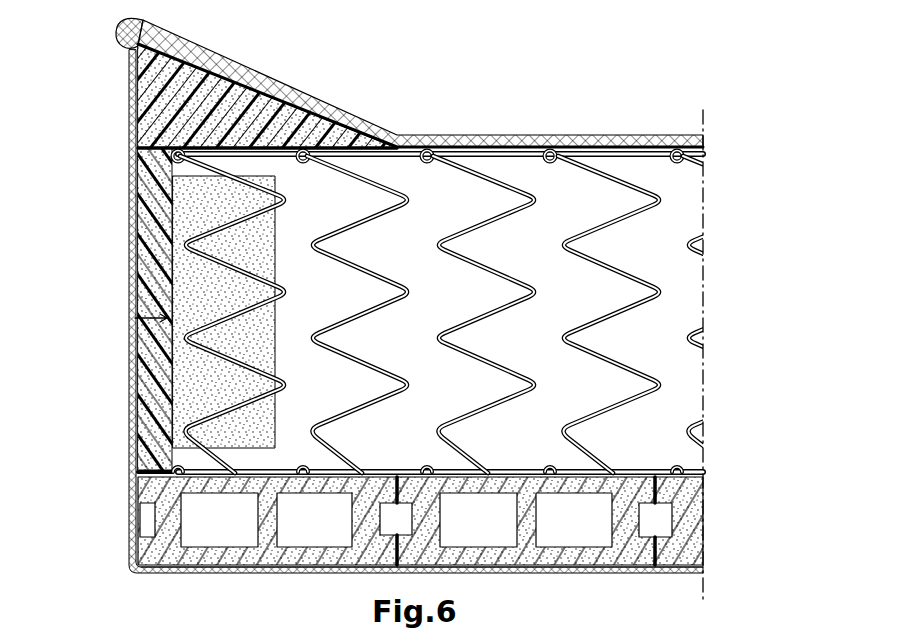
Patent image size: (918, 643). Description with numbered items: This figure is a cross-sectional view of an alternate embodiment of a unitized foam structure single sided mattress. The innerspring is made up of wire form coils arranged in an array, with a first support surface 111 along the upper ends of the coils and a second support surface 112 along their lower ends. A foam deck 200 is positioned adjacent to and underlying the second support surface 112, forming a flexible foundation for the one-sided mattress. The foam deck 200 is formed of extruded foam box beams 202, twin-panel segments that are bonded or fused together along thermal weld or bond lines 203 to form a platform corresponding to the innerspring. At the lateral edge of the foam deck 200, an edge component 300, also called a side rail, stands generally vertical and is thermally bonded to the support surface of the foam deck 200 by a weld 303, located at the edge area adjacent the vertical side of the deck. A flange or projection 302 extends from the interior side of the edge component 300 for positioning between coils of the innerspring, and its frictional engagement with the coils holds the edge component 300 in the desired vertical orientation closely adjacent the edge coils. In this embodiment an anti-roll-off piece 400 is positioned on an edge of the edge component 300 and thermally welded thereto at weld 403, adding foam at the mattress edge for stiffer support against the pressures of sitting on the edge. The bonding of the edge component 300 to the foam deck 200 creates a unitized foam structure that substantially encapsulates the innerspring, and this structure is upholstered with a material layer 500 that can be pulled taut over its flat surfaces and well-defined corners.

The first support surface 111 is at (482, 150).
The second support surface 112 is at (619, 488).
The foam deck 200 is at (385, 554).
The extruded foam box beams 202 is at (293, 555).
The thermal weld or bond lines 203 is at (703, 562).
The edge component 300 is at (154, 310).
The flange or projection 302 is at (200, 385).
The weld 303 is at (137, 493).
The anti-roll-off piece 400 is at (177, 112).
The weld 403 is at (131, 180).
The upholstery material layer 500 is at (703, 141).